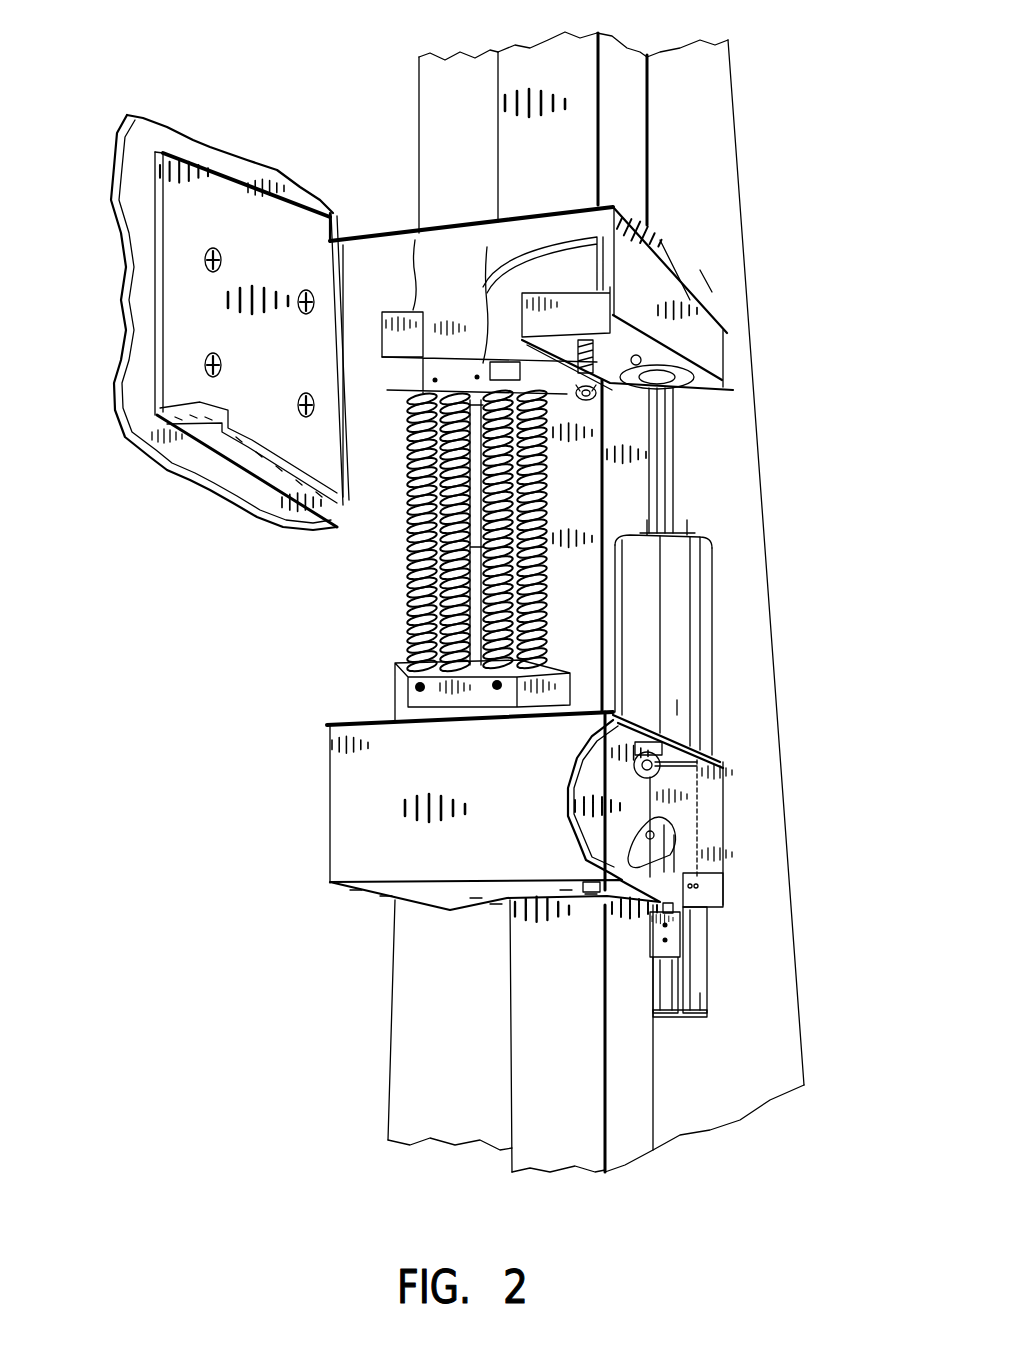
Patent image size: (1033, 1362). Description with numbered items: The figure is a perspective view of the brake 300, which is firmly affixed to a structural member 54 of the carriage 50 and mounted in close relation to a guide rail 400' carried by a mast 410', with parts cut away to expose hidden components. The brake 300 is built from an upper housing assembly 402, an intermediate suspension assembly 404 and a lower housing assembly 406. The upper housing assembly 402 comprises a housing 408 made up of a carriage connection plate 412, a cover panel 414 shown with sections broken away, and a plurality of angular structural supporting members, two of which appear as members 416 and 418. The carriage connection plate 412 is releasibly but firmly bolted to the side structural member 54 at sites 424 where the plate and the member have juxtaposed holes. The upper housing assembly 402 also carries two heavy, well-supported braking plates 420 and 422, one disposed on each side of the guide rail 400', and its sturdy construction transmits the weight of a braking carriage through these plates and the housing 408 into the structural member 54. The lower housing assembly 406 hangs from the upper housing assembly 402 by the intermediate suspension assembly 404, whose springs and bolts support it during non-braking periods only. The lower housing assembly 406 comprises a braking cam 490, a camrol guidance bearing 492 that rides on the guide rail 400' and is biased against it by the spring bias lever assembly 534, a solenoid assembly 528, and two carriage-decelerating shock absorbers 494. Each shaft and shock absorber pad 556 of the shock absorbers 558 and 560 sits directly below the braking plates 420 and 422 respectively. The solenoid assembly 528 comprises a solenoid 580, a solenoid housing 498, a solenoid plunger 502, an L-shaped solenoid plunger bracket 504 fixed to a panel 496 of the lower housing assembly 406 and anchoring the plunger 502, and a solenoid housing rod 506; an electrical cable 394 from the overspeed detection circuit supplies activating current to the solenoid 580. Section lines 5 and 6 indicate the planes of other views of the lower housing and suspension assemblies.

The carriage 50 is at (176, 115).
The structural member 54 is at (248, 175).
The bolt sites 424 is at (307, 290).
The carriage connection plate 412 is at (188, 298).
The angular structural supporting member 418 is at (200, 468).
The braking plate 422 is at (390, 241).
The housing 408 is at (473, 248).
The mast 410' is at (614, 589).
The guide rail 400' is at (664, 610).
The cover panel 414 is at (567, 228).
The angular structural supporting member 416 is at (667, 277).
The upper housing assembly 402 is at (687, 300).
The spring bias lever assembly 534 is at (700, 344).
The braking plate 420 is at (705, 392).
The shaft and shock absorber pad 556 is at (673, 445).
The intermediate suspension assembly 404 is at (382, 560).
The section line 6- 6 is at (337, 590).
The shock absorber 560 is at (517, 700).
The carriage decelerating shock absorber 494 is at (673, 633).
The shock absorber 558 is at (690, 562).
The brake 300 is at (745, 664).
The section line 5- 5 is at (677, 700).
The solenoid 580 is at (650, 940).
The camrol guidance bearing 492 is at (727, 773).
The braking cam 490 is at (727, 807).
The panel 496 is at (713, 820).
The lower housing assembly 406 is at (730, 837).
The solenoid housing rod 506 is at (703, 877).
The solenoid assembly 528 is at (703, 927).
The solenoid housing 498 is at (700, 943).
The electrical cable 394 is at (710, 980).
The solenoid plunger bracket 504 is at (700, 993).
The solenoid plunger 502 is at (707, 1012).